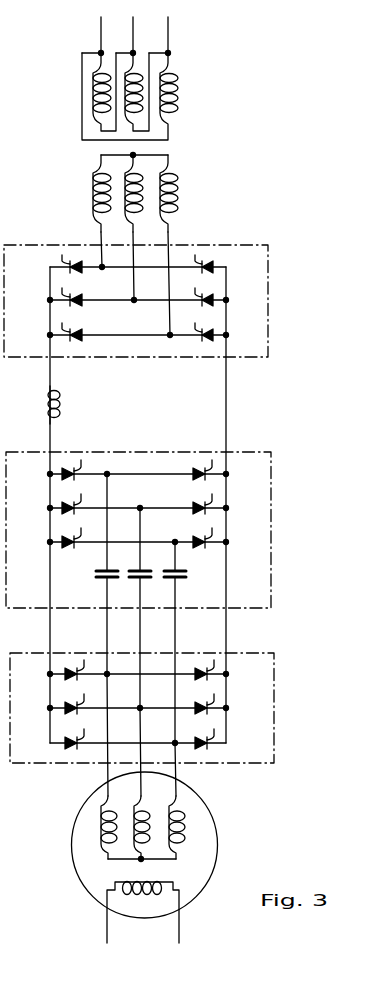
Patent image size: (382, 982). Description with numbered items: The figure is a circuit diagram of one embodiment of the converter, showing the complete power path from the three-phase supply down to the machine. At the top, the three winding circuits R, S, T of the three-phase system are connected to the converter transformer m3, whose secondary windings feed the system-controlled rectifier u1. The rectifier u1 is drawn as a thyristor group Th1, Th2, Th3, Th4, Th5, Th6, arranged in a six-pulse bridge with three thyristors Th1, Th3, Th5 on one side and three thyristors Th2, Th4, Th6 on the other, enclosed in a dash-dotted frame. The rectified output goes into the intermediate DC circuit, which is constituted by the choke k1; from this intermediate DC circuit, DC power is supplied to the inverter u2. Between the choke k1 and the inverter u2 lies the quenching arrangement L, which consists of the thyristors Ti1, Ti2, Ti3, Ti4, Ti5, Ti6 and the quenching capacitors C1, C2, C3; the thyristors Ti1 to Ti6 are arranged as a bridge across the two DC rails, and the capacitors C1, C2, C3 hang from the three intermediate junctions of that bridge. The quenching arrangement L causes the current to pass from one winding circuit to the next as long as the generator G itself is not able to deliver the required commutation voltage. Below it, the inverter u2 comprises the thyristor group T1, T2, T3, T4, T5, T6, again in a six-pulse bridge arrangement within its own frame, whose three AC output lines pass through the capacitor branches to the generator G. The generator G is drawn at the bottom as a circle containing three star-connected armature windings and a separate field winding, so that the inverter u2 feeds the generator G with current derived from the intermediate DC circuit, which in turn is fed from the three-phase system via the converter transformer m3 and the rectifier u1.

The winding circuit R is at (92, 31).
The winding circuit S is at (125, 31).
The winding circuit T is at (160, 31).
The converter transformer m3 is at (166, 149).
The system-controlled rectifier u1 is at (155, 301).
The thyristor Th1 is at (70, 270).
The thyristor Th2 is at (205, 263).
The thyristor Th3 is at (70, 303).
The thyristor Th4 is at (205, 296).
The thyristor Th5 is at (70, 338).
The thyristor Th6 is at (205, 331).
The choke k1 is at (52, 419).
The quenching arrangement L is at (154, 530).
The thyristor Ti1 is at (62, 472).
The thyristor Ti2 is at (205, 477).
The thyristor Ti3 is at (62, 506).
The thyristor Ti4 is at (205, 511).
The thyristor Ti5 is at (62, 540).
The thyristor Ti6 is at (205, 545).
The quenching capacitor C1 is at (103, 581).
The quenching capacitor C2 is at (137, 581).
The quenching capacitor C3 is at (171, 581).
The inverter u2 is at (159, 708).
The thyristor T1 is at (65, 676).
The thyristor T2 is at (207, 677).
The thyristor T3 is at (65, 710).
The thyristor T4 is at (207, 711).
The thyristor T5 is at (65, 745).
The thyristor T6 is at (207, 746).
The generator G is at (217, 841).